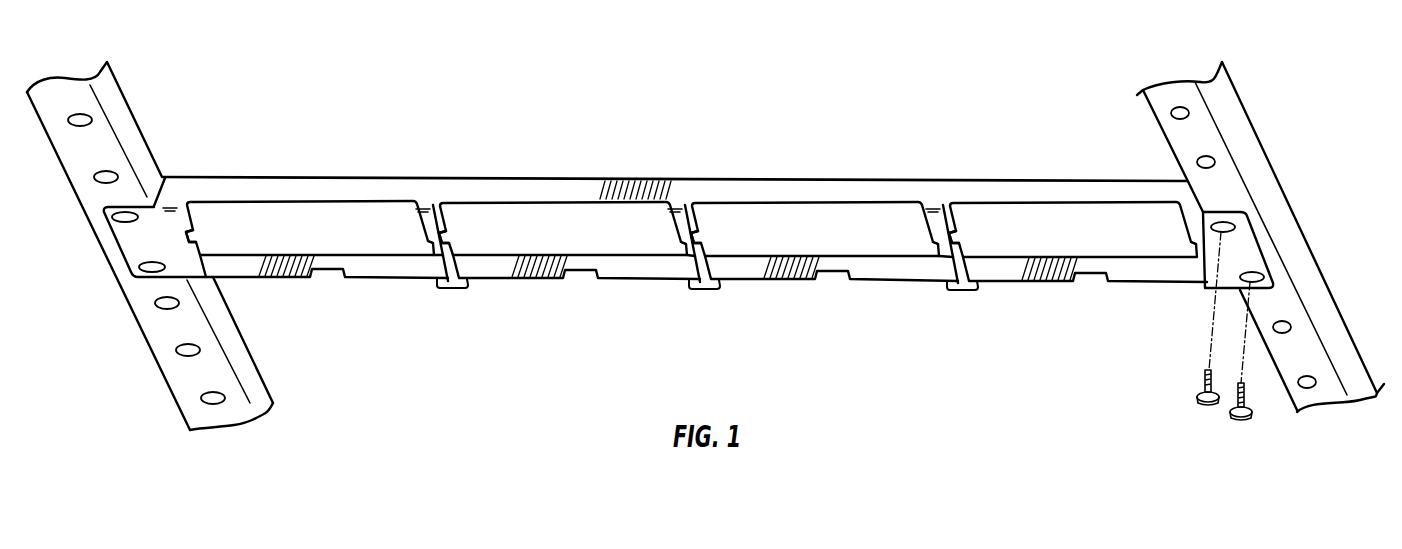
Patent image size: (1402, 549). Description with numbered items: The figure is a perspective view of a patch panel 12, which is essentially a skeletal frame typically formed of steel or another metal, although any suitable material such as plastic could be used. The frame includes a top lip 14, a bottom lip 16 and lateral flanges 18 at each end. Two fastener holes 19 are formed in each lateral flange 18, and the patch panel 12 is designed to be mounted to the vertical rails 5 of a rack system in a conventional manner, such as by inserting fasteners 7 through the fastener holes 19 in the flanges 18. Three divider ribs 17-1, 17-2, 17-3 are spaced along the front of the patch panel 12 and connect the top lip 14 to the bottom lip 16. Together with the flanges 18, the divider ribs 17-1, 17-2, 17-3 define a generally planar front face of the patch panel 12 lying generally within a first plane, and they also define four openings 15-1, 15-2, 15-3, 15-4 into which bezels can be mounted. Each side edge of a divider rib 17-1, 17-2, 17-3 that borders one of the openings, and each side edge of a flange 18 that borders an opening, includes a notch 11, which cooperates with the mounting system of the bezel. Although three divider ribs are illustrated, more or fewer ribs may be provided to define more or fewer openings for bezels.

The vertical rails 5 is at (138, 128).
The fasteners 7 is at (1198, 399).
The notch 11 is at (197, 252).
The patch panel 12 is at (676, 136).
The top lip 14 is at (825, 187).
The opening 15-1 is at (324, 238).
The opening 15-2 is at (577, 238).
The opening 15-3 is at (829, 238).
The opening 15-4 is at (1087, 238).
The bottom lip 16 is at (780, 272).
The divider rib 17-1 is at (453, 280).
The divider rib 17-2 is at (705, 281).
The divider rib 17-3 is at (963, 283).
The lateral flanges 18 is at (152, 248).
The fastener holes 19 is at (198, 298).